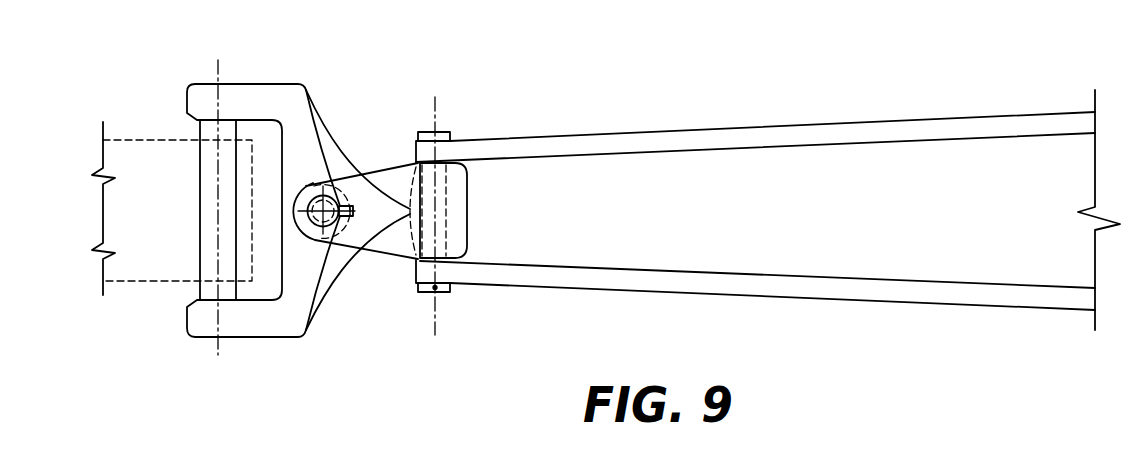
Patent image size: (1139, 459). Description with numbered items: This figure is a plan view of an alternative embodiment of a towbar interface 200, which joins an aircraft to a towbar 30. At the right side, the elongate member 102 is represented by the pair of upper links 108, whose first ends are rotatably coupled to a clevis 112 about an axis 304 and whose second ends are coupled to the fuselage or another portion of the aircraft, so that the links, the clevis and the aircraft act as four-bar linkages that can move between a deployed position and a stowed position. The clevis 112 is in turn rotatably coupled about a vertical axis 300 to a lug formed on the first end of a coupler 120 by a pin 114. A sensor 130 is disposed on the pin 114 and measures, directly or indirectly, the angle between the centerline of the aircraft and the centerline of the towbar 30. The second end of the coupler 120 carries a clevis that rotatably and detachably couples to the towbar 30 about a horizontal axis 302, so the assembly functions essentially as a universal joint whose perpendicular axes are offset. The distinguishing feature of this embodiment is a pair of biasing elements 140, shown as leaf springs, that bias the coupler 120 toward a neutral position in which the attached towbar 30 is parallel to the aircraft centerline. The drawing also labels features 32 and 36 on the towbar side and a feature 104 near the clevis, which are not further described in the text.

The towbar 30 is at (133, 284).
The mounting member 32 is at (146, 140).
The flange 36 is at (199, 290).
The elongate member 102 is at (849, 118).
The coupler 104 is at (466, 124).
The upper links 108 is at (737, 125).
The clevis 112 is at (385, 168).
The pin 114 is at (308, 184).
The coupler 120 is at (289, 338).
The sensor 130 is at (382, 237).
The biasing elements 140 is at (344, 160).
The towbar interface 200 is at (728, 64).
The vertical axis 300 is at (326, 240).
The horizontal axis 302 is at (218, 350).
The axis 304 is at (437, 313).